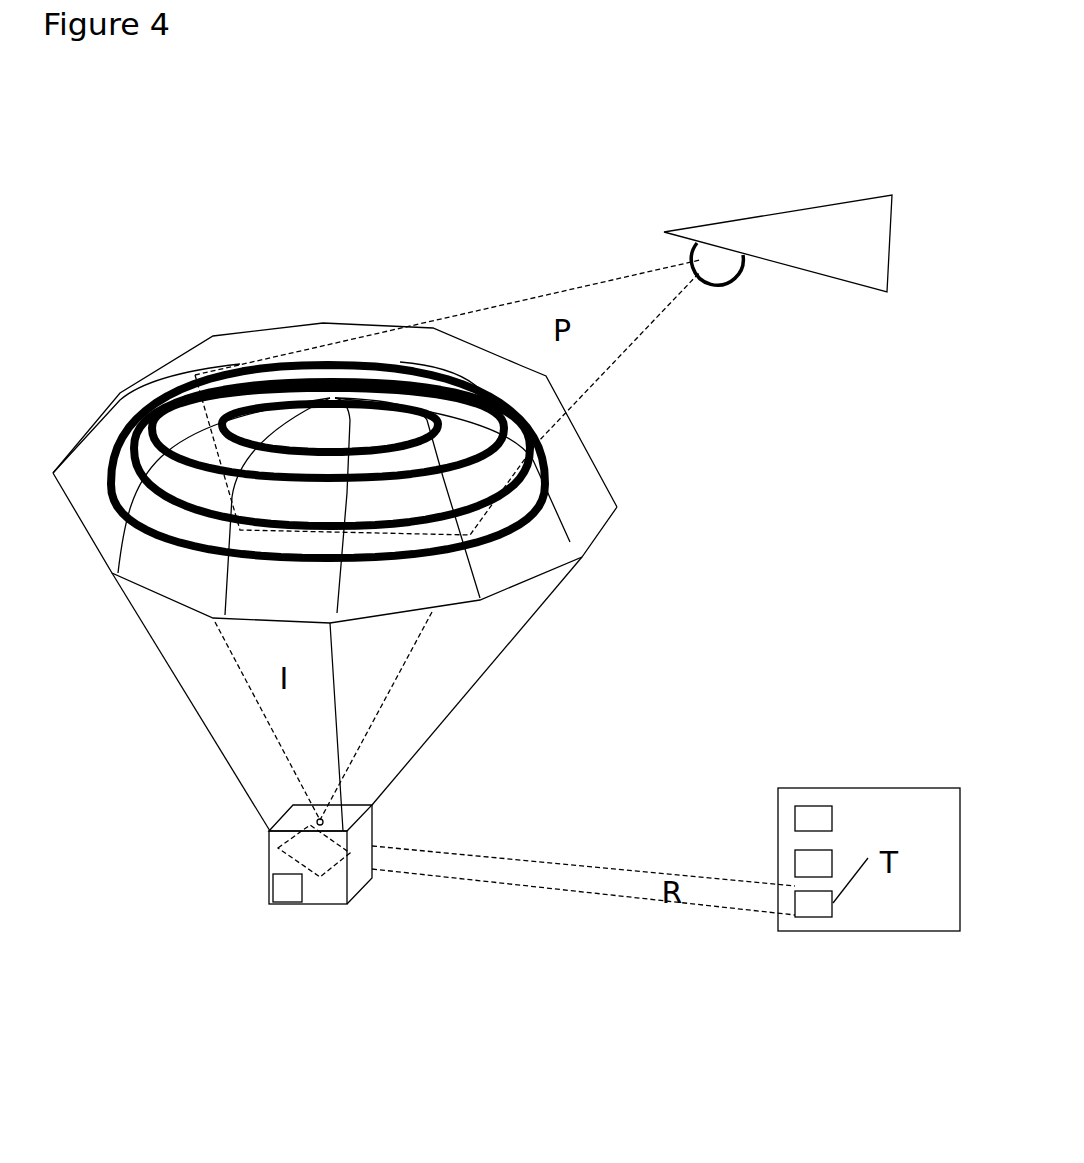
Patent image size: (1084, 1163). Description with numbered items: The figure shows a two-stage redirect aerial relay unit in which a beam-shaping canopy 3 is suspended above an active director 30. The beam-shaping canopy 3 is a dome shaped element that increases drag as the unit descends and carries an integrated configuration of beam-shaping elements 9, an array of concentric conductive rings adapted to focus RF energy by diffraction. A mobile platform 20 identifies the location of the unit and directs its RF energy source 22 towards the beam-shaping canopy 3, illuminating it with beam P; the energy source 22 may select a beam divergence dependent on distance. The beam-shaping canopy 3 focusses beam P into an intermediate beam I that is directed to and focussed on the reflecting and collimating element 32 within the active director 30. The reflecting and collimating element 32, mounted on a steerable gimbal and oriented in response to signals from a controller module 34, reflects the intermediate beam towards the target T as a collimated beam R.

The beam-shaping canopy 3 is at (213, 337).
The beam-shaping elements 9 is at (555, 480).
The mobile platform 20 is at (715, 233).
The RF energy source 22 is at (717, 260).
The active director 30 is at (325, 894).
The reflecting and collimating element 32 is at (312, 850).
The controller module 34 is at (288, 888).